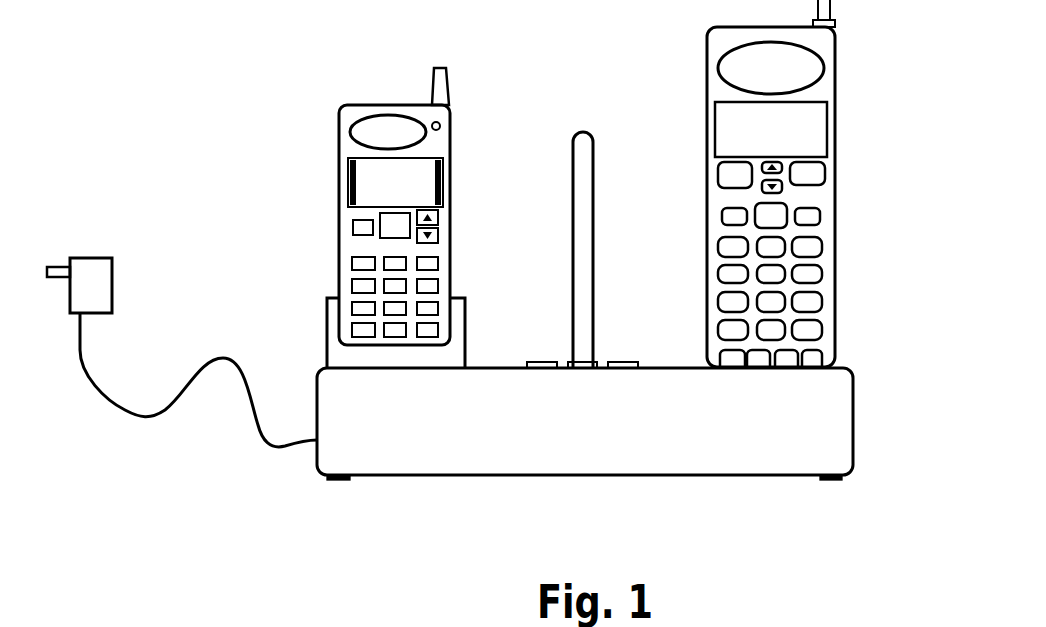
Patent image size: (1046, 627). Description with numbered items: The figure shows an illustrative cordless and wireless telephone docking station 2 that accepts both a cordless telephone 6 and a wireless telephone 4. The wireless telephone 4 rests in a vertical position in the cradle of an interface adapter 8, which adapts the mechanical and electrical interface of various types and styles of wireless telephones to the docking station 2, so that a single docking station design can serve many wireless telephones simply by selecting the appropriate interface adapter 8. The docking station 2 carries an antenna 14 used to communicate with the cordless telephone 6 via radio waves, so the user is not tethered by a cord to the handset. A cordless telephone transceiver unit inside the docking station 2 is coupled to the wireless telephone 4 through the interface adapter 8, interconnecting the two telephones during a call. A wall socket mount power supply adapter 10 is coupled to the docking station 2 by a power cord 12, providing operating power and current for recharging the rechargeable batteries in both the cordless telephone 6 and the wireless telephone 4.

The docking station 2 is at (853, 420).
The wireless telephone 4 is at (339, 188).
The cordless telephone 6 is at (836, 97).
The interface adapter 8 is at (327, 322).
The power supply adapter 10 is at (112, 267).
The power cord 12 is at (133, 418).
The antenna 14 is at (590, 133).